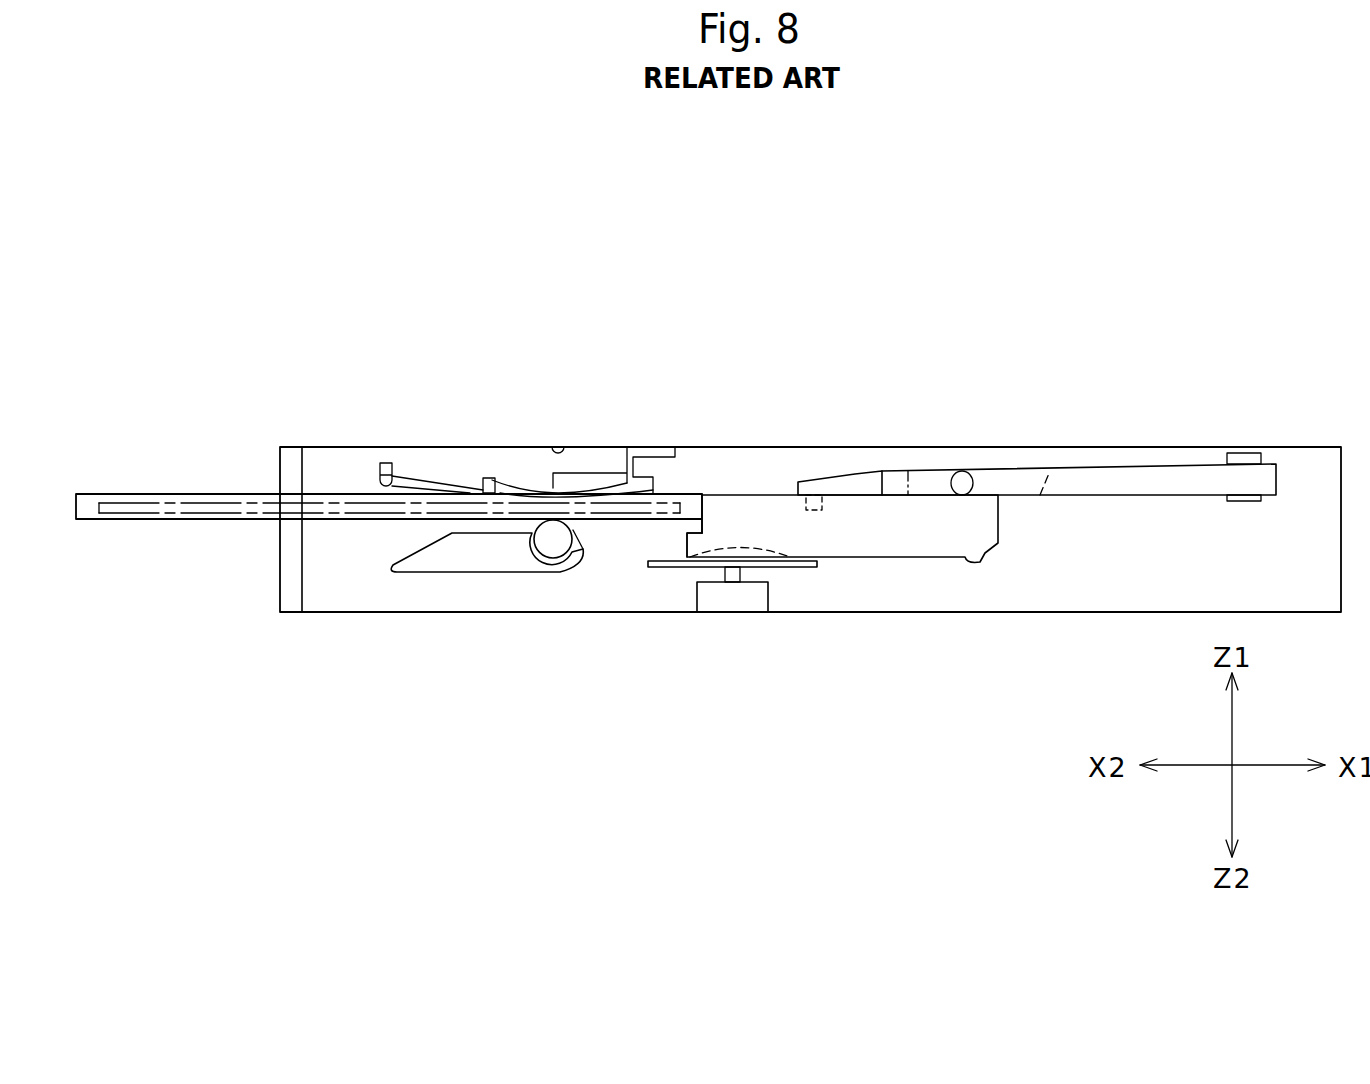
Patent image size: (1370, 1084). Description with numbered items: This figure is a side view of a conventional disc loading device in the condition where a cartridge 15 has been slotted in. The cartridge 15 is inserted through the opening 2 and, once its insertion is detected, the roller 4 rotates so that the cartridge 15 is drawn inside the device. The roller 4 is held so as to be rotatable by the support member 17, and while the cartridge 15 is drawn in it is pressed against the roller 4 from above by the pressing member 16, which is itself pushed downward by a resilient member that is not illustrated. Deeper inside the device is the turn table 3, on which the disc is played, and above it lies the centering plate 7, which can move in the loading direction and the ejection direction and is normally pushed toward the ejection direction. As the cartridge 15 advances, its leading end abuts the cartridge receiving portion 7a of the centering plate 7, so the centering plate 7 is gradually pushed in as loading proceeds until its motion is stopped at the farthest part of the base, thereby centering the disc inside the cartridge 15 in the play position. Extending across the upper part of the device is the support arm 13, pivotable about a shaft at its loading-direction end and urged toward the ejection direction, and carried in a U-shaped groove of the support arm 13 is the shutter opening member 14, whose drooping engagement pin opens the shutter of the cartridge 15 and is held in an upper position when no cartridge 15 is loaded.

The opening 2 is at (280, 447).
The turn table 3 is at (787, 565).
The roller 4 is at (553, 538).
The centering plate 7 is at (908, 537).
The cartridge receiving portion 7a is at (718, 510).
The support arm 13 is at (1190, 477).
The shutter opening member 14 is at (853, 473).
The cartridge 15 is at (175, 494).
The pressing member 16 is at (437, 465).
The support member 17 is at (435, 555).